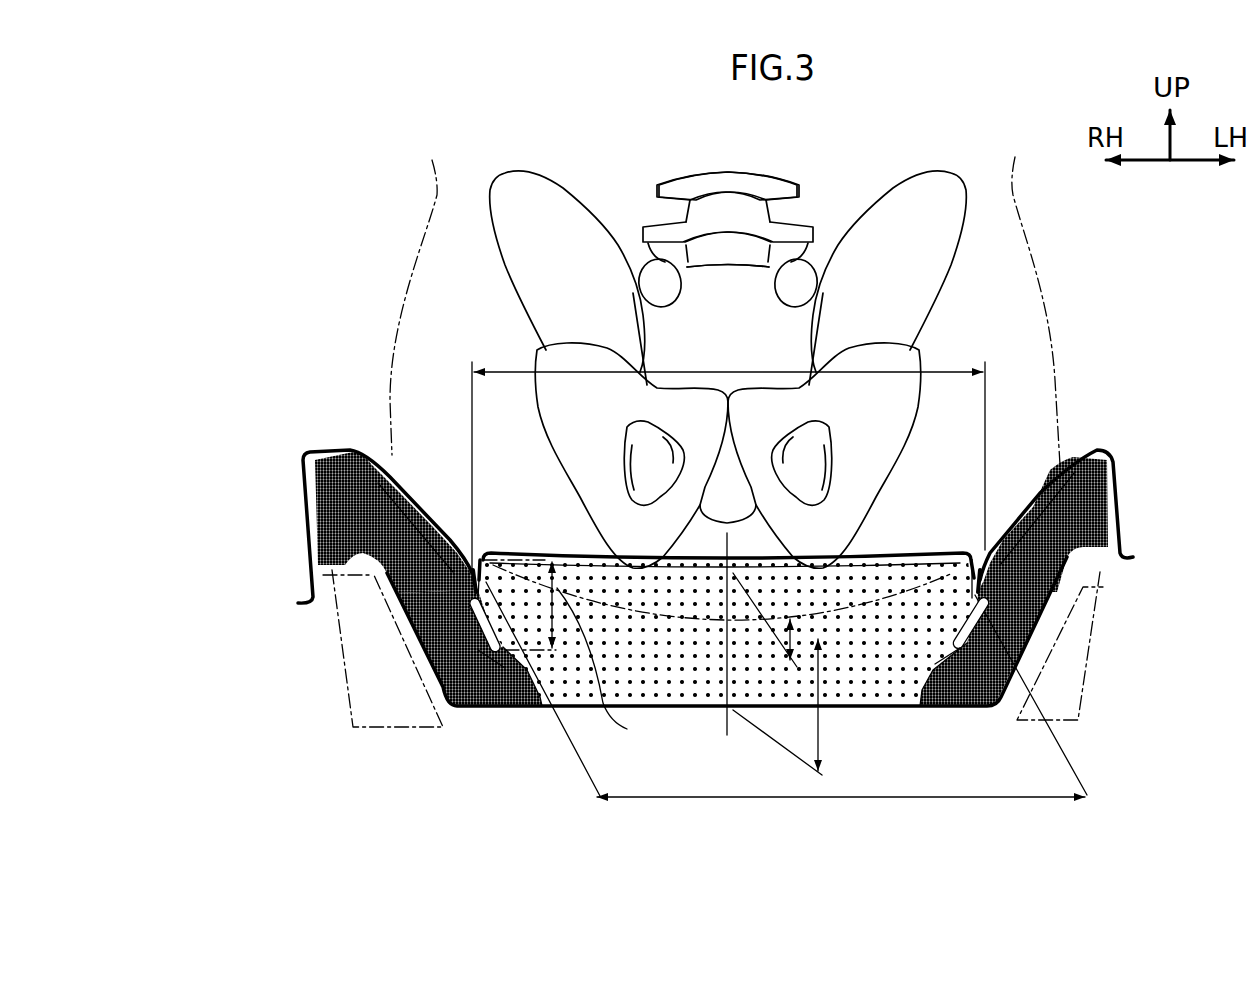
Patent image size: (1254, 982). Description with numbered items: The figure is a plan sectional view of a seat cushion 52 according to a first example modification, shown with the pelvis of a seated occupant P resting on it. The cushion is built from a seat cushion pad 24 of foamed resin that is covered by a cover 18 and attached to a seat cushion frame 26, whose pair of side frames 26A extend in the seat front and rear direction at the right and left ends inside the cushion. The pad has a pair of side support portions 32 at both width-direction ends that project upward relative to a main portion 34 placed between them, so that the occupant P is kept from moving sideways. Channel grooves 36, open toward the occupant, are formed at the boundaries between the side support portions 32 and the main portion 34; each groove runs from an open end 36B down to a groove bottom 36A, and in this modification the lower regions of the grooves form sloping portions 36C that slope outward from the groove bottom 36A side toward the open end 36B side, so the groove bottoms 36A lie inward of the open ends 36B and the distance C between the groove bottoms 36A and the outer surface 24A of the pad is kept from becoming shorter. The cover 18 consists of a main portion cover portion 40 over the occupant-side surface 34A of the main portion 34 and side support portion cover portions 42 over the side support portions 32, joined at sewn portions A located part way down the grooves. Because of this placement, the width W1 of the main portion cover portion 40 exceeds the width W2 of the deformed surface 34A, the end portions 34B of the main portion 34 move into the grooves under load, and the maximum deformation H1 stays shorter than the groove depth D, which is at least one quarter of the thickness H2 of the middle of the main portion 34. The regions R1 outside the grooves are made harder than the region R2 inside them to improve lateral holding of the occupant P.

The cover 18 is at (726, 517).
The seat cushion pad 24 is at (737, 664).
The outer surface of the seat cushion pad 24A is at (440, 713).
The seat cushion frame 26 is at (713, 663).
The side frames 26A is at (353, 697).
The side support portions 32 is at (305, 455).
The main portion 34 is at (730, 374).
The surface on the seated occupant side of the main portion 34A is at (780, 550).
The seat width direction end portions of the main portion 34B is at (482, 578).
The channel grooves 36 is at (726, 623).
The groove bottoms 36A is at (505, 707).
The open ends 36B is at (476, 580).
The sloping portions 36C is at (477, 640).
The main portion cover portion 40 is at (915, 550).
The side support portion cover portions 42 is at (318, 445).
The seat cushion 52 is at (1102, 298).
The occupant P is at (418, 242).
The sewn portions A is at (467, 571).
The distance between groove bottoms and outer surface C is at (474, 712).
The depth of the channel grooves D is at (565, 651).
The maximum amount of deformation H1 is at (795, 642).
The thickness of the seat width direction middle portion of the main portion H2 is at (828, 712).
The seat width direction dimension of the main portion cover portion W1 is at (933, 370).
The seat width direction dimension of the surface on the seated occupant side W2 is at (785, 797).
The regions on the seat width direction outsides of the channel grooves R1 is at (303, 497).
The region on the seat width direction inside of the channel grooves R2 is at (890, 680).